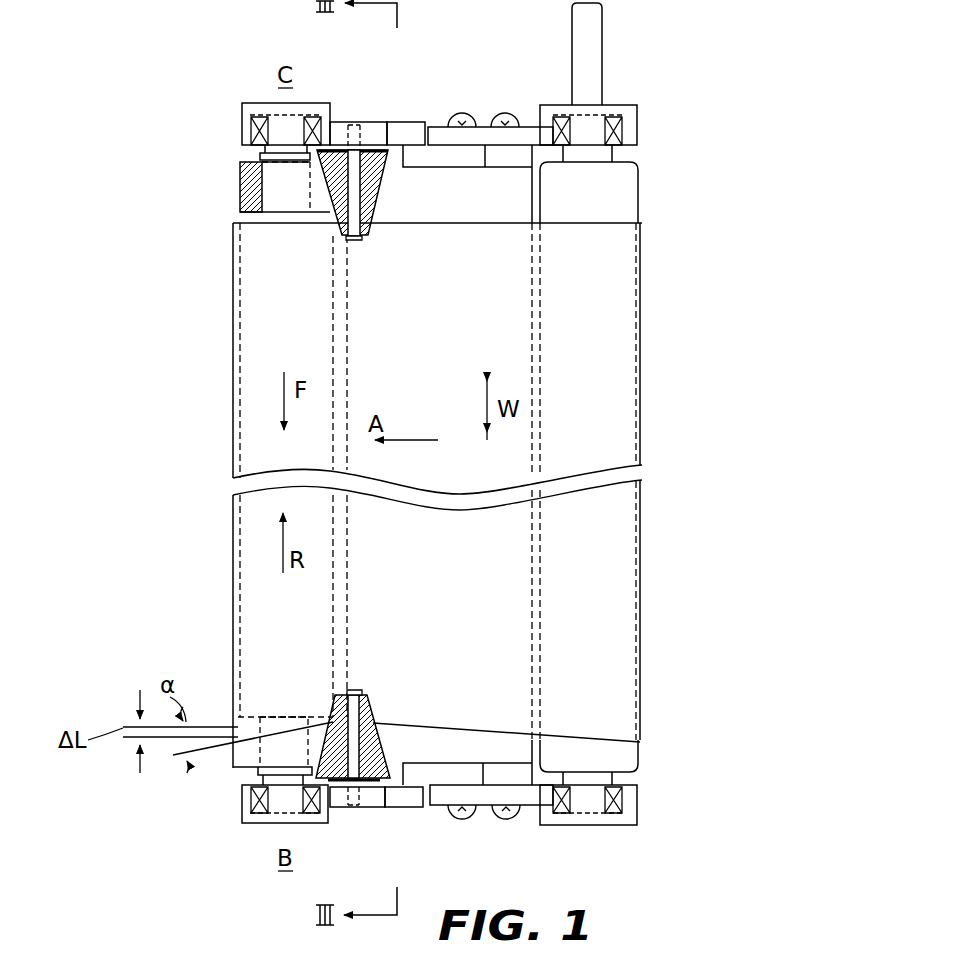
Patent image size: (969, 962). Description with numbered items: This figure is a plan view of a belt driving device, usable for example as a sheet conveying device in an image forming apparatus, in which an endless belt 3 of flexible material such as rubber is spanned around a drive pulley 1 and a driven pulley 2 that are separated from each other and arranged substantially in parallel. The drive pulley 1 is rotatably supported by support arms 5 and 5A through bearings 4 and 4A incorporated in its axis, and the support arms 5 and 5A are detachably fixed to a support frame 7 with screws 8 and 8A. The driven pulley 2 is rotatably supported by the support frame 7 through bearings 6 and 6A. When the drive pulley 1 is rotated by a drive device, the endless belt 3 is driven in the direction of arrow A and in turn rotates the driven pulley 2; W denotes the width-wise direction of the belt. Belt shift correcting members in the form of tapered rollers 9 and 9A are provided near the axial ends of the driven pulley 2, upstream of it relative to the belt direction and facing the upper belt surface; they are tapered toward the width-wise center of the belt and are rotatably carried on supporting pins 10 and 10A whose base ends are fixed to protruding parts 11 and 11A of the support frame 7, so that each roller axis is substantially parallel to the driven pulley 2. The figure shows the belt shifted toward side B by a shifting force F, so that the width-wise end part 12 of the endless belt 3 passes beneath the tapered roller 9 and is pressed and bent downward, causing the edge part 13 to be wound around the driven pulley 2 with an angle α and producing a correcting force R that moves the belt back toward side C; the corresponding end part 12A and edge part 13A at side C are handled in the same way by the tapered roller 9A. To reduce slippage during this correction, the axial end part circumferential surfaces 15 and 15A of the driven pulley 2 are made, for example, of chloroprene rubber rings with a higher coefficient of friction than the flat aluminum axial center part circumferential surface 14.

The drive pulley 1 is at (639, 200).
The driven pulley 2 is at (333, 308).
The endless belt 3 is at (641, 366).
The bearing 4 is at (625, 803).
The bearing 4A is at (625, 131).
The support arm 5 is at (527, 807).
The support arm 5A is at (527, 127).
The bearing 6 is at (250, 803).
The bearing 6A is at (252, 118).
The support frame 7 is at (417, 122).
The screw 8 is at (503, 814).
The screw 8A is at (505, 118).
The tapered roller 9 is at (370, 705).
The tapered roller 9A is at (383, 206).
The supporting pin 10 is at (353, 748).
The supporting pin 10A is at (353, 217).
The protruding part 11 is at (338, 808).
The protruding part 11A is at (372, 122).
The width-wise end part 12 is at (292, 730).
The width-wise end part 12A is at (250, 243).
The edge part 13 is at (316, 722).
The edge part 13A is at (268, 222).
The axial center part circumferential surface 14 is at (222, 220).
The axial end part circumferential surface 15 is at (240, 718).
The axial end part circumferential surface 15A is at (242, 183).